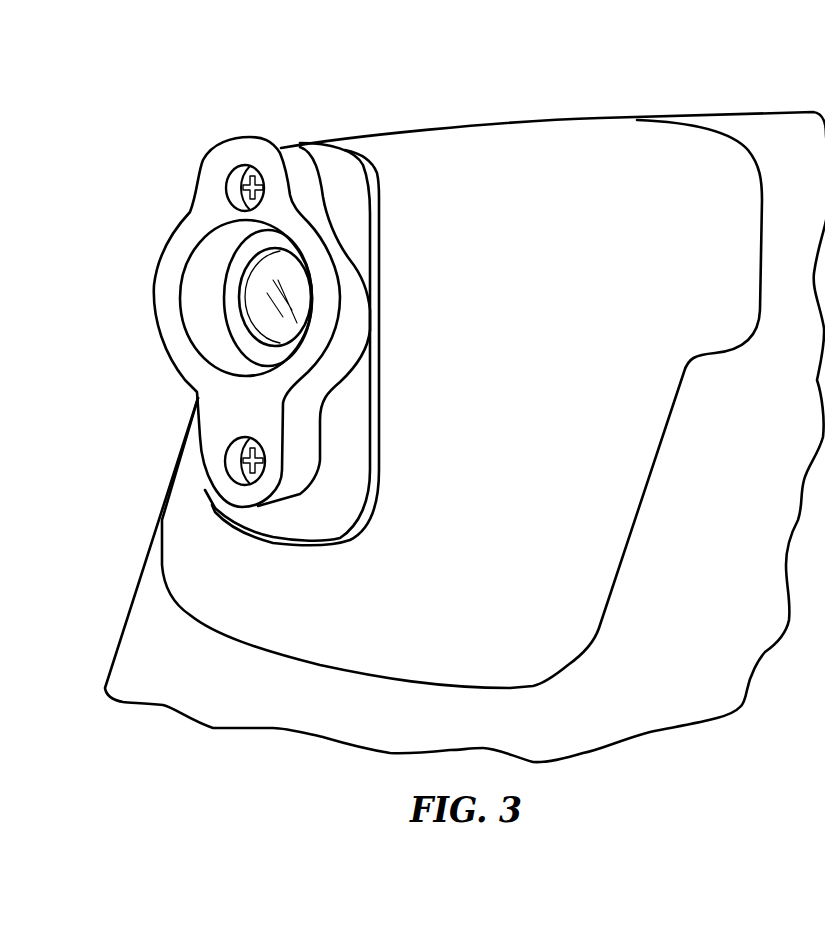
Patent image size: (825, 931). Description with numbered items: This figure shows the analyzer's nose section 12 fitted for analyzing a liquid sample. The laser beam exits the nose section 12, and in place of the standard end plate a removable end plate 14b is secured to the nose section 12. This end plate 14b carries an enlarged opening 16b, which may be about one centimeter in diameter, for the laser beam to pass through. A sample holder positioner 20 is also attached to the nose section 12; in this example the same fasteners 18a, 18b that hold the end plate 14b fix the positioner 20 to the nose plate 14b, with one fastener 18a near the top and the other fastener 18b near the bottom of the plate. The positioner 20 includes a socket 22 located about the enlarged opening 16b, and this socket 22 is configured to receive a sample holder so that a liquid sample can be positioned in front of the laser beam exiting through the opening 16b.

The nose section 12 is at (487, 160).
The end plate 14b is at (347, 181).
The enlarged opening 16b is at (253, 280).
The fastener 18a is at (240, 180).
The fastener 18b is at (240, 452).
The sample holder positioner 20 is at (198, 218).
The socket 22 is at (210, 323).